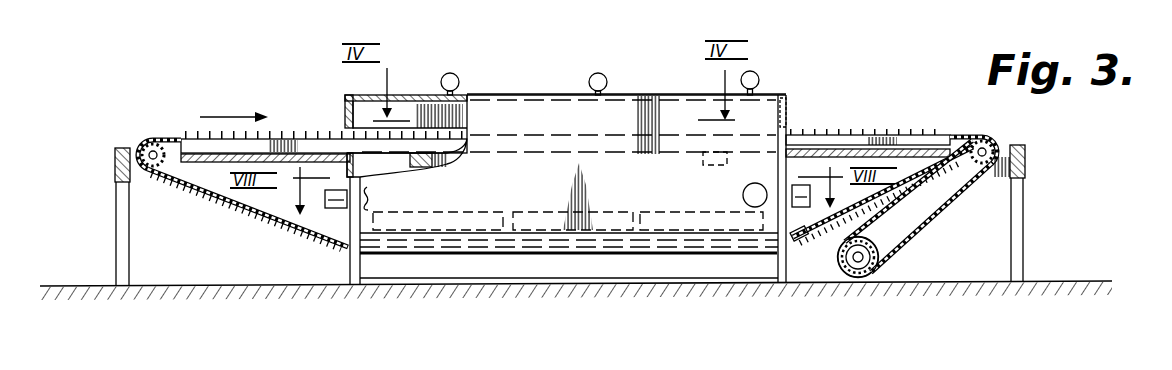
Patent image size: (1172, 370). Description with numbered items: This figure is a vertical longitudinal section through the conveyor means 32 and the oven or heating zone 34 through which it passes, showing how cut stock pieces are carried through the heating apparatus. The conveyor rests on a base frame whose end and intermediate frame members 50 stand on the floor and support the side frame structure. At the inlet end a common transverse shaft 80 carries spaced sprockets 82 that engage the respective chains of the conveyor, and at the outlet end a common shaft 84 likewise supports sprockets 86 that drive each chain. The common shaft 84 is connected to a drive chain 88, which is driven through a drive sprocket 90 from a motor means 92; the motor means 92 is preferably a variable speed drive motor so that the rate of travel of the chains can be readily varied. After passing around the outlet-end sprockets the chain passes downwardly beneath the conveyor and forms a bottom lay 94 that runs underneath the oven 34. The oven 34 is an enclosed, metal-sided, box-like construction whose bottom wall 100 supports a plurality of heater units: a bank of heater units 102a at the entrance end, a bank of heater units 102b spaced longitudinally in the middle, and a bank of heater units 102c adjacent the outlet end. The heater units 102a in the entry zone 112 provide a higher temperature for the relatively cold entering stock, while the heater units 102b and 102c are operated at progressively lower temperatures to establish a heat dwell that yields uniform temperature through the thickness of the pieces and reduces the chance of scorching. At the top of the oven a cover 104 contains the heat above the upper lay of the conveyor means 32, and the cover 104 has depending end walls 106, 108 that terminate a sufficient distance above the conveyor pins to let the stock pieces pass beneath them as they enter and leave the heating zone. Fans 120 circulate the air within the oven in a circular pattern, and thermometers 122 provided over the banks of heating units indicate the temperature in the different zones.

The conveyor means 32 is at (297, 122).
The oven or heating zone 34 is at (558, 85).
The end and intermediate frame members 50 is at (118, 248).
The common transverse shaft 80 is at (140, 148).
The sprockets 82 is at (170, 138).
The common shaft 84 is at (993, 140).
The sprockets 86 is at (965, 137).
The drive chain 88 is at (1025, 187).
The drive sprocket 90 is at (838, 257).
The motor means 92 is at (877, 270).
The bottom lay 94 is at (232, 210).
The bottom wall 100 is at (507, 225).
The heater units 102a is at (485, 217).
The heater units 102b is at (547, 222).
The heater units 102c is at (713, 217).
The cover 104 is at (777, 95).
The depending end wall 106 is at (345, 102).
The depending end wall 108 is at (790, 108).
The entry zone 112 is at (497, 115).
The fans 120 is at (367, 192).
The thermometers 122 is at (450, 73).